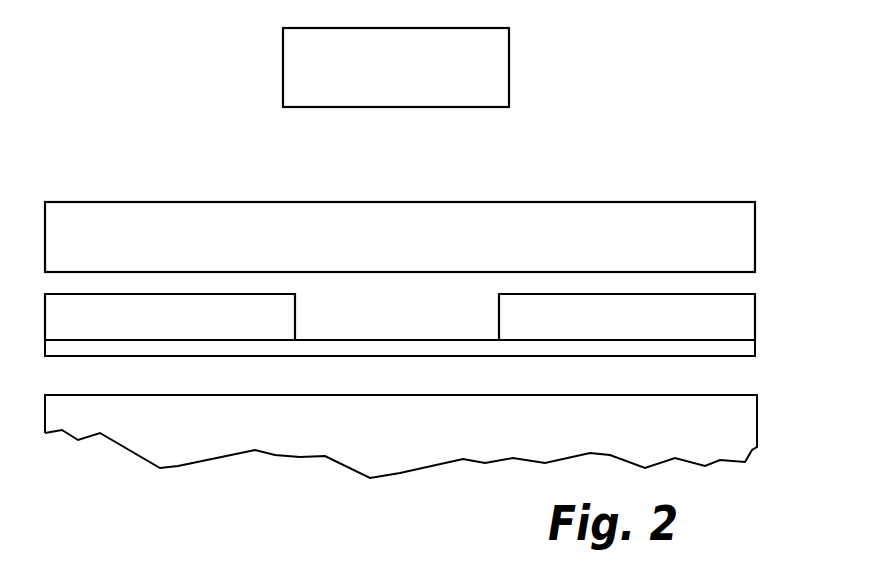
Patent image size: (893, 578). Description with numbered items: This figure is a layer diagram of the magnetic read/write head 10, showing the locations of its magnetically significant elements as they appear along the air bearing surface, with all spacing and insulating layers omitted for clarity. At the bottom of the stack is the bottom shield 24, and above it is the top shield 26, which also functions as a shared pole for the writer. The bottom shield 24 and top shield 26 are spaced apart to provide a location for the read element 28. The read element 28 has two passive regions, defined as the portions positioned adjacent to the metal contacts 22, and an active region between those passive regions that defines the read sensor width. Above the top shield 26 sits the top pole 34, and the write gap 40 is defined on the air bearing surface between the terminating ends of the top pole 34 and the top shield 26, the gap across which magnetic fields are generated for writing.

The magnetic read/write head 10 is at (680, 136).
The metal contacts 22 is at (226, 331).
The bottom shield 24 is at (406, 441).
The top shield/shared pole 26 is at (410, 247).
The read element 28 is at (742, 351).
The top pole 34 is at (410, 72).
The write gap 40 is at (542, 107).